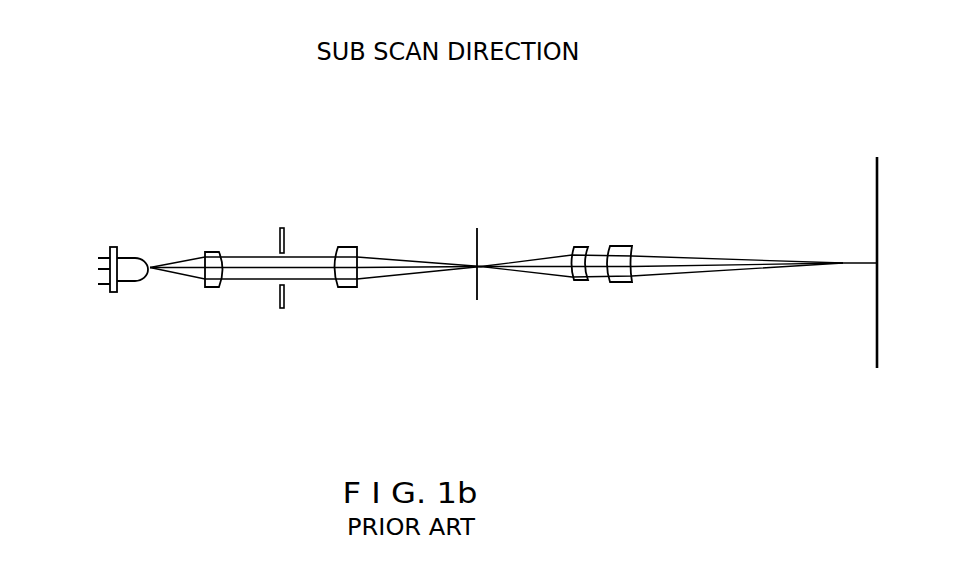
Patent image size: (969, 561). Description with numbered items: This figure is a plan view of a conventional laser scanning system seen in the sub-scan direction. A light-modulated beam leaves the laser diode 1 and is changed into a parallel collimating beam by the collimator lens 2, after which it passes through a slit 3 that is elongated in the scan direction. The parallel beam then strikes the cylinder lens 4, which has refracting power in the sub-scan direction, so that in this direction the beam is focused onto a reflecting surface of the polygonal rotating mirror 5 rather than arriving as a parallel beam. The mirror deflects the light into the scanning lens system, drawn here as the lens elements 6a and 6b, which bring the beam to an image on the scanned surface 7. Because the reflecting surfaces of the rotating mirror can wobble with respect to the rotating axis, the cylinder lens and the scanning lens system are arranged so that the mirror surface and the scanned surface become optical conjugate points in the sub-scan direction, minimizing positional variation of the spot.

The laser diode 1 is at (136, 278).
The collimator lens 2 is at (213, 253).
The slit 3 is at (281, 309).
The cylinder lens 4 is at (343, 247).
The polygonal rotating mirror 5 is at (476, 291).
The scanning lens system element 6a is at (577, 282).
The scanning lens system element 6b is at (627, 246).
The scanned surface 7 is at (876, 299).